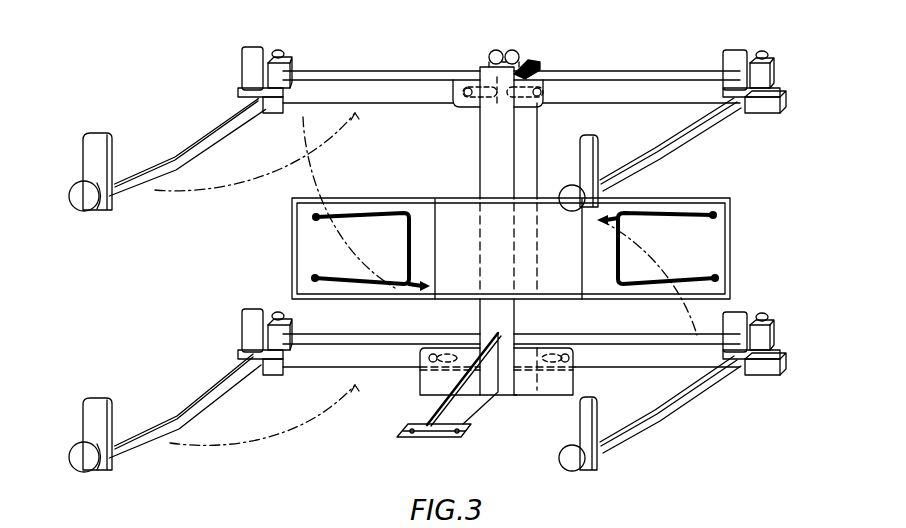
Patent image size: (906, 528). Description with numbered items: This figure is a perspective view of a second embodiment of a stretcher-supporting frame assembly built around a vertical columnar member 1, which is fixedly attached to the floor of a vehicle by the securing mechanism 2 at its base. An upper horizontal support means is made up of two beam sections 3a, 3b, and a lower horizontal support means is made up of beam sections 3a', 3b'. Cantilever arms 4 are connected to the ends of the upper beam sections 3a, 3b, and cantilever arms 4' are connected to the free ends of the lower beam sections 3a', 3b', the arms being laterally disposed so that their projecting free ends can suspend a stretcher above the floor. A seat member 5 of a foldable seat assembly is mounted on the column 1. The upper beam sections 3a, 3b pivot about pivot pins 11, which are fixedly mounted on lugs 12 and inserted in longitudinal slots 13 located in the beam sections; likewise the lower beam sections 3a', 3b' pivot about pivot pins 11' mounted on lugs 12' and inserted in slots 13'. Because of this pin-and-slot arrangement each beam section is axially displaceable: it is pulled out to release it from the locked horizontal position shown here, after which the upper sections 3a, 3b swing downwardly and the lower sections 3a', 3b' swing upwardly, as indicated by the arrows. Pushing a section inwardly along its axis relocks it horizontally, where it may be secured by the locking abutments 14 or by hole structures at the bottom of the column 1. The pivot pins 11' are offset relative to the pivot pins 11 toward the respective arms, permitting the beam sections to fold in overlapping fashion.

The vertical columnar member 1 is at (484, 157).
The securing mechanism 2 is at (486, 392).
The beam section 3a is at (359, 80).
The beam section 3b is at (650, 78).
The beam section 3a' is at (359, 342).
The beam section 3b' is at (650, 343).
The cantilever arm 4 is at (405, 154).
The cantilever arm 4' is at (405, 413).
The seat member 5 is at (446, 199).
The pivot pin 11 is at (517, 56).
The pivot pin 11' is at (510, 332).
The lug 12 is at (504, 114).
The lug 12' is at (507, 377).
The longitudinal slot 13 is at (511, 56).
The longitudinal slot 13' is at (503, 332).
The locking abutment 14 is at (501, 50).